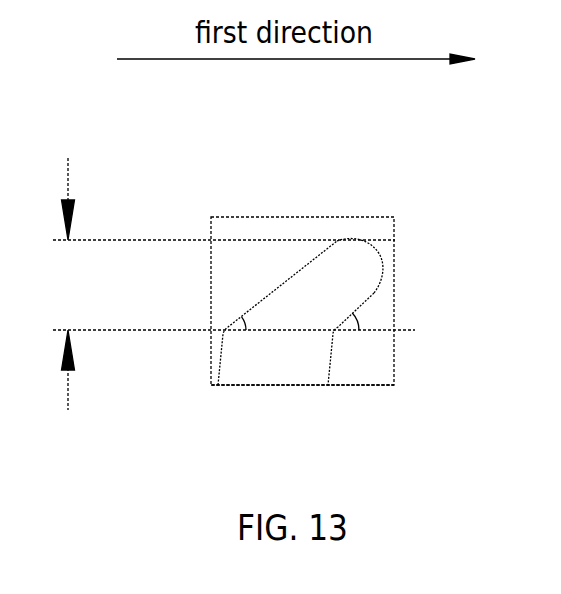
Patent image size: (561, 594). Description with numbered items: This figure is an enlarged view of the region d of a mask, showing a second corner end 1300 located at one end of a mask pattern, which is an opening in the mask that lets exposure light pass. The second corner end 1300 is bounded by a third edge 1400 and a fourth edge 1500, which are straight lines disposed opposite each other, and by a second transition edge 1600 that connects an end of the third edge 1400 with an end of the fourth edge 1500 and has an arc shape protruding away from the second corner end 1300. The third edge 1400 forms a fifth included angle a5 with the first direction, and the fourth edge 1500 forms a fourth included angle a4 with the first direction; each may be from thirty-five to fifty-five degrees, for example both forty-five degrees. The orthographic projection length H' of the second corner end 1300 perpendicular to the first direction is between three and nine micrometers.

The second corner end 1300 is at (316, 244).
The third edge 1400 is at (283, 285).
The second transition edge 1600 is at (368, 247).
The fourth edge 1500 is at (350, 315).
The fifth included angle a5 is at (245, 320).
The fourth included angle a4 is at (362, 323).
The enlarged region d is at (270, 387).
The orthographic projection length H' is at (234, 284).